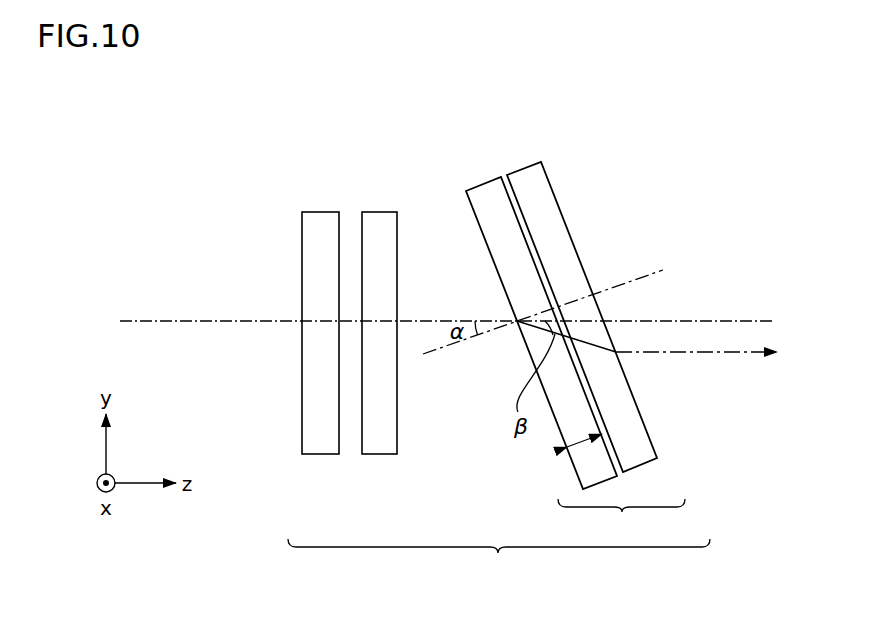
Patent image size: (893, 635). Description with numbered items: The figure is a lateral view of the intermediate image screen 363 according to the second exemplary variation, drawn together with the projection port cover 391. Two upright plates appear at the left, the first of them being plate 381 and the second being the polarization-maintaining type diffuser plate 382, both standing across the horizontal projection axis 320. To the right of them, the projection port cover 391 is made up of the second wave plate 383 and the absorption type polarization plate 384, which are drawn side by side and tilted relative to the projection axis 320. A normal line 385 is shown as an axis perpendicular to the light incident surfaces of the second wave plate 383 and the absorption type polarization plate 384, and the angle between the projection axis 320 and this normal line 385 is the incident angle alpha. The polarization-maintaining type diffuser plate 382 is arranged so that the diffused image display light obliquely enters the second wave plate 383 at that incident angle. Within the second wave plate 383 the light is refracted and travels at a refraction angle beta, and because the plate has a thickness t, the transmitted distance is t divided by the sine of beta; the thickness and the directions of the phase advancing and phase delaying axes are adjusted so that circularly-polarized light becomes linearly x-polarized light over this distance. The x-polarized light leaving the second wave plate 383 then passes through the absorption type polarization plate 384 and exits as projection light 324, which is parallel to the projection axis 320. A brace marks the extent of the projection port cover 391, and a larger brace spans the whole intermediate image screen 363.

The projection axis 320 is at (732, 320).
The projection light 324 is at (733, 354).
The intermediate image screen 363 is at (499, 562).
The first plate of intermediate image screen 381 is at (325, 212).
The polarization-maintaining type diffuser plate 382 is at (382, 212).
The second wave plate 383 is at (483, 184).
The absorption type polarization plate 384 is at (548, 178).
The normal line 385 is at (643, 273).
The projection port cover 391 is at (621, 521).